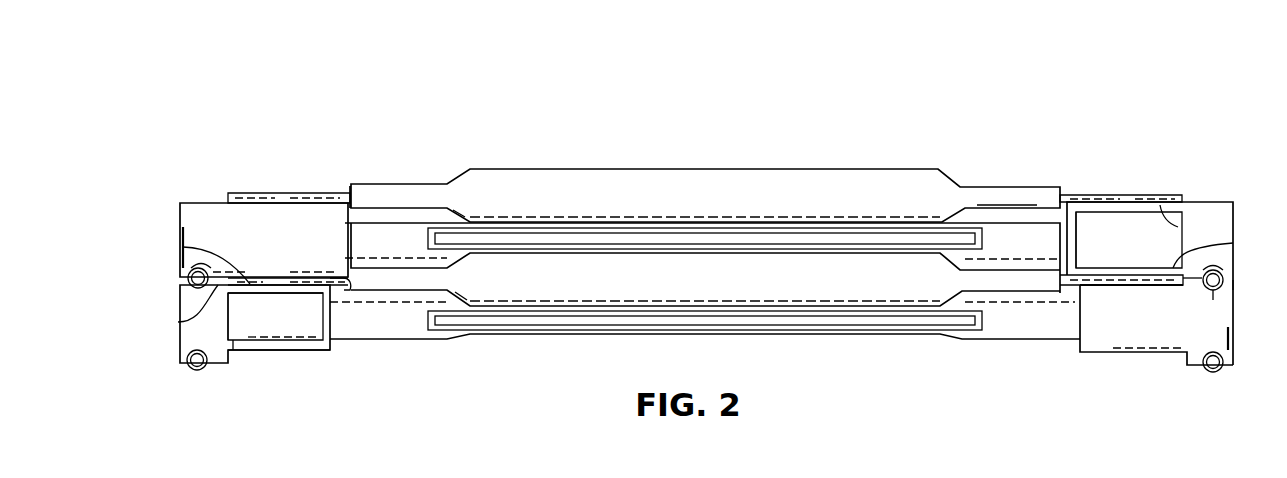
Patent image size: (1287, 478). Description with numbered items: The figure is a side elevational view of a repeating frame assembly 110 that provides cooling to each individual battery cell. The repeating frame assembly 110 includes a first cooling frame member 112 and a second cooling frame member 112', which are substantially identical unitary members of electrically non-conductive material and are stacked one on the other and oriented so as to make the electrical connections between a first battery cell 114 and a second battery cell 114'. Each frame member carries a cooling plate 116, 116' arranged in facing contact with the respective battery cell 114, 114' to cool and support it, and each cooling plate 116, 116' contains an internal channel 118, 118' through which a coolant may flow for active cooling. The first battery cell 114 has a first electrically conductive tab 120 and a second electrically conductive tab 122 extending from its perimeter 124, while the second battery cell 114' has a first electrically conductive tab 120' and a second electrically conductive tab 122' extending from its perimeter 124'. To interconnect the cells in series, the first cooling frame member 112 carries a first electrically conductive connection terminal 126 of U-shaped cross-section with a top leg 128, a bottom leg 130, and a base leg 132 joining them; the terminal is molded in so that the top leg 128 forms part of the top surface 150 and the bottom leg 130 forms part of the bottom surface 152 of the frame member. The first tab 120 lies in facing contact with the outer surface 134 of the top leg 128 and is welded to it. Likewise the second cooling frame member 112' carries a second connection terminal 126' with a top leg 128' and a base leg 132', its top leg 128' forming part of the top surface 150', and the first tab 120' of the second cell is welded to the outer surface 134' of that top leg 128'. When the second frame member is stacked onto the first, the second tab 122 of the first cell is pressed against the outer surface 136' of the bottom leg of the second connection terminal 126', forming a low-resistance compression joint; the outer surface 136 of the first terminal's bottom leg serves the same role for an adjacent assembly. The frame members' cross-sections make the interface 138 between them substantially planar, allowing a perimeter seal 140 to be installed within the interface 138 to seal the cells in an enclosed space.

The repeating frame assembly 110 is at (207, 116).
The first cooling frame member 112 is at (692, 317).
The second cooling frame member 112' is at (224, 217).
The first battery cell 114 is at (684, 276).
The second battery cell 114' is at (693, 181).
The cooling plate 116 is at (705, 367).
The cooling plate 116' is at (702, 261).
The internal channel 118 is at (705, 345).
The internal channel 118' is at (705, 257).
The first electrically conductive tab 120 is at (176, 258).
The first electrically conductive tab 120' is at (1187, 223).
The second electrically conductive tab 122 is at (1131, 301).
The second electrically conductive tab 122' is at (289, 175).
The perimeter 124 is at (322, 268).
The perimeter 124' is at (349, 174).
The first electrically conductive connection terminal 126 is at (732, 312).
The second electrically conductive connection terminal 126' is at (1172, 259).
The top leg 128 is at (235, 315).
The top leg 128' is at (1114, 240).
The bottom leg 130 is at (233, 350).
The base leg 132 is at (303, 316).
The base leg 132' is at (1128, 241).
The outer surface 134 is at (275, 309).
The outer surface 134' is at (1121, 174).
The outer surface 136 is at (279, 368).
The outer surface 136' is at (1131, 301).
The interface 138 is at (1227, 283).
The perimeter seal 140 is at (1215, 291).
The top surface 150 is at (159, 310).
The top surface 150' is at (1147, 256).
The bottom surface 152 is at (207, 369).